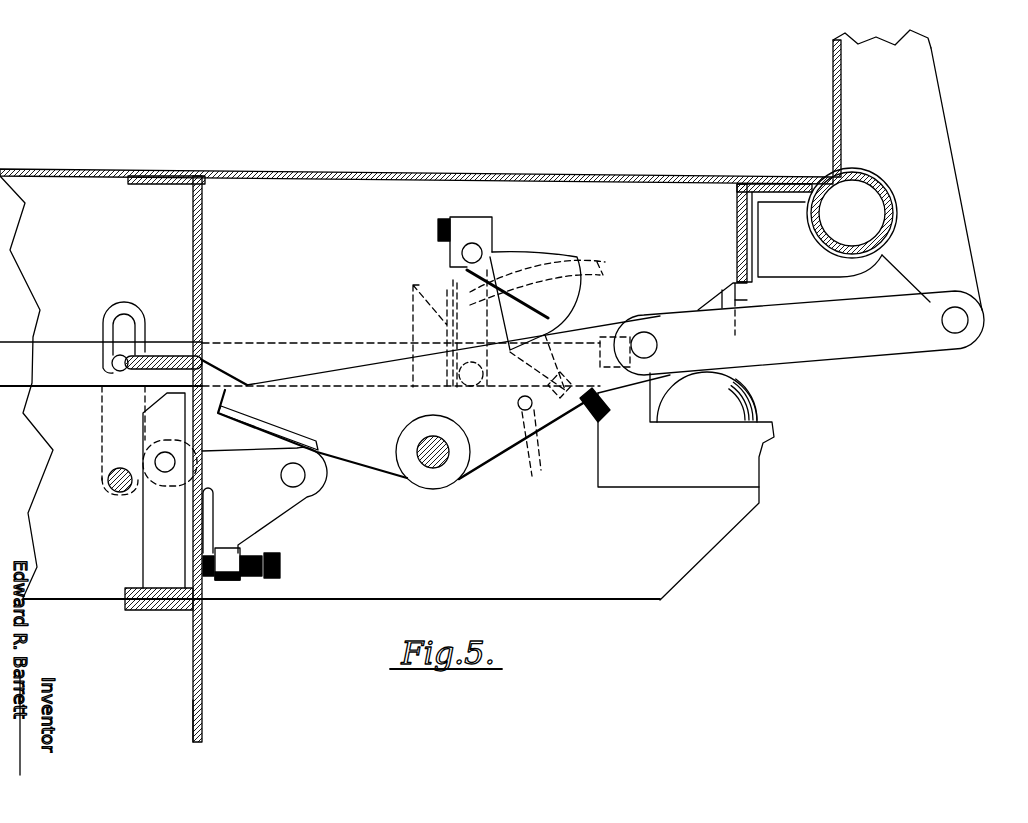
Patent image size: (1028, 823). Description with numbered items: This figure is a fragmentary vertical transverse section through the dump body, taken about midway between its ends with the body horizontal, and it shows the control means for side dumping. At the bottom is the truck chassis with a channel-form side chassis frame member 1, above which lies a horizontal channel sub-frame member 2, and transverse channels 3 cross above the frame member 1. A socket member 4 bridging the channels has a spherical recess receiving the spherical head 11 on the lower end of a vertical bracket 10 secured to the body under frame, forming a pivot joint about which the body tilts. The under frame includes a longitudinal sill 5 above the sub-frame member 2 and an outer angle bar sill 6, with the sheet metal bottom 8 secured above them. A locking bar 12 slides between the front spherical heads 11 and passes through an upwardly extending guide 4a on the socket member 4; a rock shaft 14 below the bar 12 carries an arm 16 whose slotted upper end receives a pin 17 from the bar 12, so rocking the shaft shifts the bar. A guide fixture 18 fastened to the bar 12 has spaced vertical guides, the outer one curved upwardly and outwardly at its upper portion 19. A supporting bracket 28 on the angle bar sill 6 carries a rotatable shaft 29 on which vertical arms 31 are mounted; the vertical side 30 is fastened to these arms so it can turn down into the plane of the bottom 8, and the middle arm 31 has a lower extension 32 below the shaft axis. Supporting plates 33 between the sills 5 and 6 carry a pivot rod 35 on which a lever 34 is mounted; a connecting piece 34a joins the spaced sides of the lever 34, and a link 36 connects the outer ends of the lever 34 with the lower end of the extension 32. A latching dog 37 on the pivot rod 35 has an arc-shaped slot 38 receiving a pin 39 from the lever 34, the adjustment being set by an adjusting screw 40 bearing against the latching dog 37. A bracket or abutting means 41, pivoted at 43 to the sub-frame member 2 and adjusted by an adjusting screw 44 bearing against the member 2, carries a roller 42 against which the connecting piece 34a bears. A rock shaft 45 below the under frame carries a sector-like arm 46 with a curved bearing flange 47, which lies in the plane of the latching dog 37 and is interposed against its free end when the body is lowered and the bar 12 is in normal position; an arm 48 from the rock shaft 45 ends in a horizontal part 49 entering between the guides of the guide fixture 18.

The side chassis frame member 1 is at (203, 695).
The channel sub-frame member 2 is at (205, 466).
The transverse channels 3 is at (348, 585).
The socket member 4 is at (635, 455).
The upwardly extending guide 4a is at (640, 382).
The longitudinal sill 5 is at (206, 243).
The angle bar sill 6 is at (741, 185).
The bottom 8 is at (626, 177).
The vertical bracket 10 is at (740, 298).
The spherical head 11 is at (760, 414).
The locking bar 12 is at (50, 353).
The rock shaft 14 is at (112, 492).
The arm 16 is at (107, 350).
The pin 17 is at (117, 370).
The guide fixture 18 is at (413, 318).
The curved upper portion 19 is at (597, 262).
The supporting bracket 28 is at (777, 218).
The rotatable shaft 29 is at (892, 217).
The vertical side 30 is at (833, 70).
The vertical arm 31 is at (917, 62).
The lower extension 32 is at (950, 263).
The supporting plate 33 is at (682, 207).
The lever 34 is at (365, 458).
The connecting piece 34a is at (267, 433).
The pivot rod 35 is at (427, 462).
The link 36 is at (883, 340).
The latching dog 37 is at (492, 445).
The arc-shaped slot 38 is at (532, 420).
The pin 39 is at (518, 405).
The adjusting screw 40 is at (595, 420).
The bracket or abutting means 41 is at (265, 515).
The roller 42 is at (310, 497).
The pivot 43 is at (167, 473).
The adjusting screw 44 is at (252, 581).
The rock shaft 45 is at (490, 245).
The sector-like arm 46 is at (527, 265).
The curved bearing flange 47 is at (557, 323).
The arm 48 is at (463, 287).
The horizontal part 49 is at (457, 390).